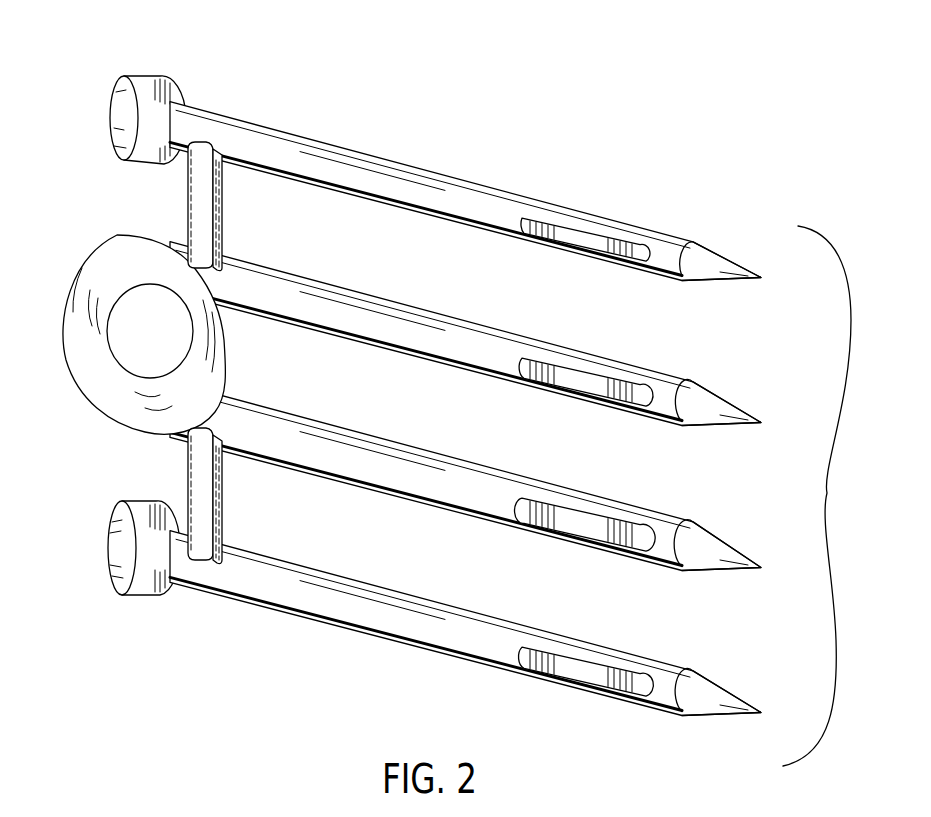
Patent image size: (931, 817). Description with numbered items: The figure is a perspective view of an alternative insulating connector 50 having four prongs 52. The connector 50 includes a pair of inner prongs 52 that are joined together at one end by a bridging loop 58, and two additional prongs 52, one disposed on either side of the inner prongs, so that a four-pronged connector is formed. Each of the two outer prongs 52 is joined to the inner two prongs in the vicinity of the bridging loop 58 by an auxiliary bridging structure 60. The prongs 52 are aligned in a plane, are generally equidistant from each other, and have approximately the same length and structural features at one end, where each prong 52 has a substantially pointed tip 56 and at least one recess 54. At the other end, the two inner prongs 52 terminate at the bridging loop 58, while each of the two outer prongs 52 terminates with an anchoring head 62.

The connector 50 is at (495, 158).
The prongs 52 is at (518, 434).
The recess 54 is at (560, 231).
The pointed tip 56 is at (722, 270).
The bridging loop 58 is at (98, 361).
The auxiliary bridging structures 60 is at (203, 201).
The anchoring head 62 is at (146, 76).